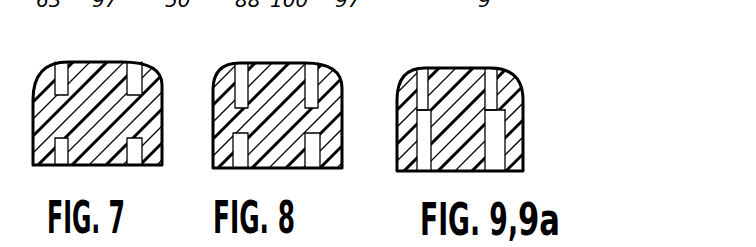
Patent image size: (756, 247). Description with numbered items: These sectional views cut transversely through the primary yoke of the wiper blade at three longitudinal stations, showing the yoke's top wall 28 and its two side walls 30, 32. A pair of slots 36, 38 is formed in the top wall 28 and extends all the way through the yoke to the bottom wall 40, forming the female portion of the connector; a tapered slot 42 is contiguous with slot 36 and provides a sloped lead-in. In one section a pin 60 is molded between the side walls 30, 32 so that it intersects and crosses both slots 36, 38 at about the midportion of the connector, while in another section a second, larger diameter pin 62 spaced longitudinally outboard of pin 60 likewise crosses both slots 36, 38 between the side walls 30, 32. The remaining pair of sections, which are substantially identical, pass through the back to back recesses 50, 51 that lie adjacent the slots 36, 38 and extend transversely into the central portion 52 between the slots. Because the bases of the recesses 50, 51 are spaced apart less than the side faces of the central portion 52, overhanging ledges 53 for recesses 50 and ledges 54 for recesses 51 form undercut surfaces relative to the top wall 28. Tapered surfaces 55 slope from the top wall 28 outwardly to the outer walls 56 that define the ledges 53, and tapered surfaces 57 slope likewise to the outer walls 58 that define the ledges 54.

In FIG. 9, the top wall 28 is at (462, 68).
In FIG. 7, the side wall 30 is at (33, 110).
In FIG. 8, the side wall 30 is at (213, 140).
In FIG. 9, the side wall 30 is at (397, 134).
In FIG. 7, the side wall 32 is at (162, 112).
In FIG. 8, the side wall 32 is at (343, 137).
In FIG. 9A, the side wall 32 is at (526, 153).
In FIG. 7, the slot 36 is at (60, 78).
In FIG. 8, the slot 36 is at (243, 66).
In FIG. 7, the slot 38 is at (134, 75).
In FIG. 8, the slot 38 is at (312, 66).
In FIG. 7, the bottom wall 40 is at (43, 167).
In FIG. 7, the tapered slot 42 is at (33, 125).
In FIG. 9, the recess 50 is at (381, 155).
In FIG. 9A, the recess 50 is at (545, 140).
In FIG. 9, the recess 51 is at (420, 170).
In FIG. 9A, the recess 51 is at (502, 145).
In FIG. 9, the central portion 52 is at (453, 160).
In FIG. 9, the ledge 53 is at (389, 107).
In FIG. 9A, the ledge 53 is at (553, 125).
In FIG. 9, the ledge 54 is at (412, 105).
In FIG. 9A, the ledge 54 is at (502, 113).
In FIG. 9, the tapered surface 55 is at (453, 66).
In FIG. 9A, the tapered surface 55 is at (527, 66).
In FIG. 9, the outer wall 56 is at (401, 60).
In FIG. 9A, the outer wall 56 is at (545, 81).
In FIG. 9, the tapered surface 57 is at (428, 92).
In FIG. 9A, the tapered surface 57 is at (494, 93).
In FIG. 9, the outer wall 58 is at (424, 97).
In FIG. 9A, the outer wall 58 is at (496, 95).
In FIG. 8, the pin 60 is at (240, 78).
In FIG. 7, the pin 62 is at (133, 140).